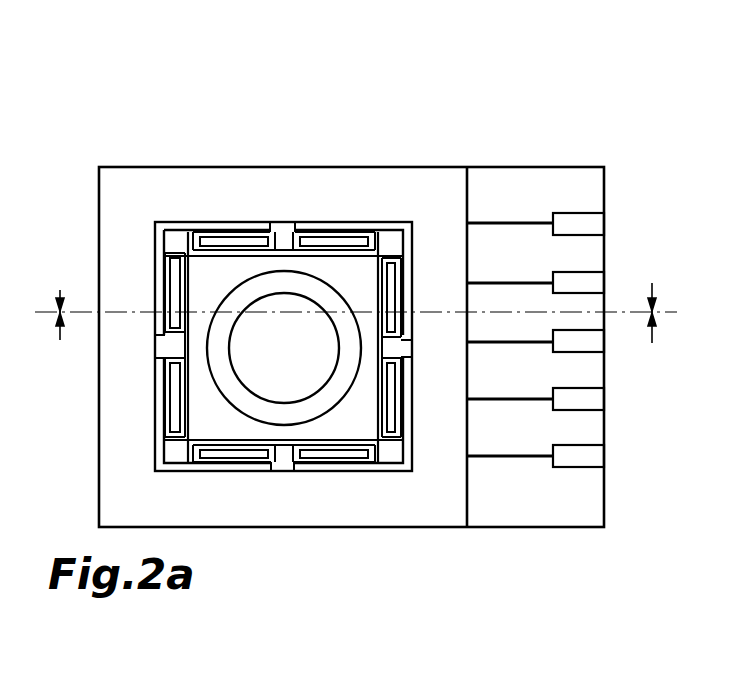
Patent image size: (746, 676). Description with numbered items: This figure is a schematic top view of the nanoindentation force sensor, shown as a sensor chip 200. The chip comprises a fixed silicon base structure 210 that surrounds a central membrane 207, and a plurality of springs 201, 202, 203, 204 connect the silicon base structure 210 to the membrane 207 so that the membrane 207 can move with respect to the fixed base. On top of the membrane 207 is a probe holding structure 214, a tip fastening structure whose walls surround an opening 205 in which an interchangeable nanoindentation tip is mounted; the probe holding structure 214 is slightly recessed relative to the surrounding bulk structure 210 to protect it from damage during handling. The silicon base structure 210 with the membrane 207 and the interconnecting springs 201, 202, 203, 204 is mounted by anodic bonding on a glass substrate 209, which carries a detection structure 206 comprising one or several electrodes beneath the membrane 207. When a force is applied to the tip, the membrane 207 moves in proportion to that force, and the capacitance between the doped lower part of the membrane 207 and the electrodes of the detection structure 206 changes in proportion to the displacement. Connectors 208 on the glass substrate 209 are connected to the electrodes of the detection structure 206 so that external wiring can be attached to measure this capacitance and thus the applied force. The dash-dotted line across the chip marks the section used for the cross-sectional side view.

The sensor chip 200 is at (488, 158).
The spring 201 is at (314, 246).
The spring 202 is at (186, 377).
The spring 203 is at (317, 467).
The spring 204 is at (387, 324).
The opening 205 is at (303, 356).
The detection structure 206 is at (386, 248).
The membrane 207 is at (205, 403).
The connectors 208 is at (594, 282).
The glass substrate 209 is at (575, 497).
The silicon base structure 210 is at (163, 187).
The probe holding structure 214 is at (236, 393).